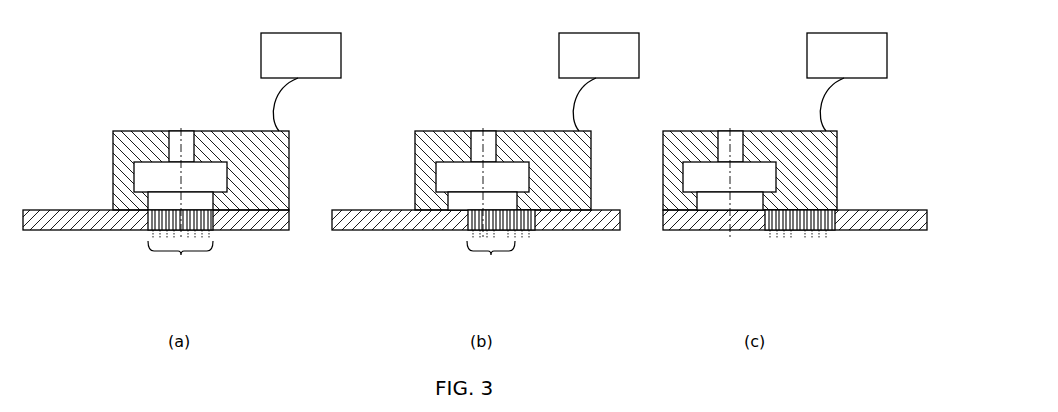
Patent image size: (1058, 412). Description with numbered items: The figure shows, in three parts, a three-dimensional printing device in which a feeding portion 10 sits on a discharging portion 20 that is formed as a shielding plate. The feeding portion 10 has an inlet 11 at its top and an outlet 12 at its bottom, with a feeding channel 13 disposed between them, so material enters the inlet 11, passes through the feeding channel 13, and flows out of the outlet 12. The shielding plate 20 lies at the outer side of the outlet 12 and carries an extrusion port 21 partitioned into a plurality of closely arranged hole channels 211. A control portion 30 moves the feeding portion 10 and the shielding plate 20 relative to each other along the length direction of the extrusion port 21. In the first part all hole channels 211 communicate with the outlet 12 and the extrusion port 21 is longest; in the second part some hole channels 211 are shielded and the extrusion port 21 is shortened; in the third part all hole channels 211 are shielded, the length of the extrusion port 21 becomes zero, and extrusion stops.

The feeding portion 10 is at (122, 168).
The inlet 11 is at (181, 128).
The outlet 12 is at (147, 203).
The feeding channel 13 is at (147, 176).
The discharging portion 20 is at (80, 230).
The extrusion port 21 is at (331, 262).
The hole channels 211 is at (200, 230).
The control portion 30 is at (261, 50).